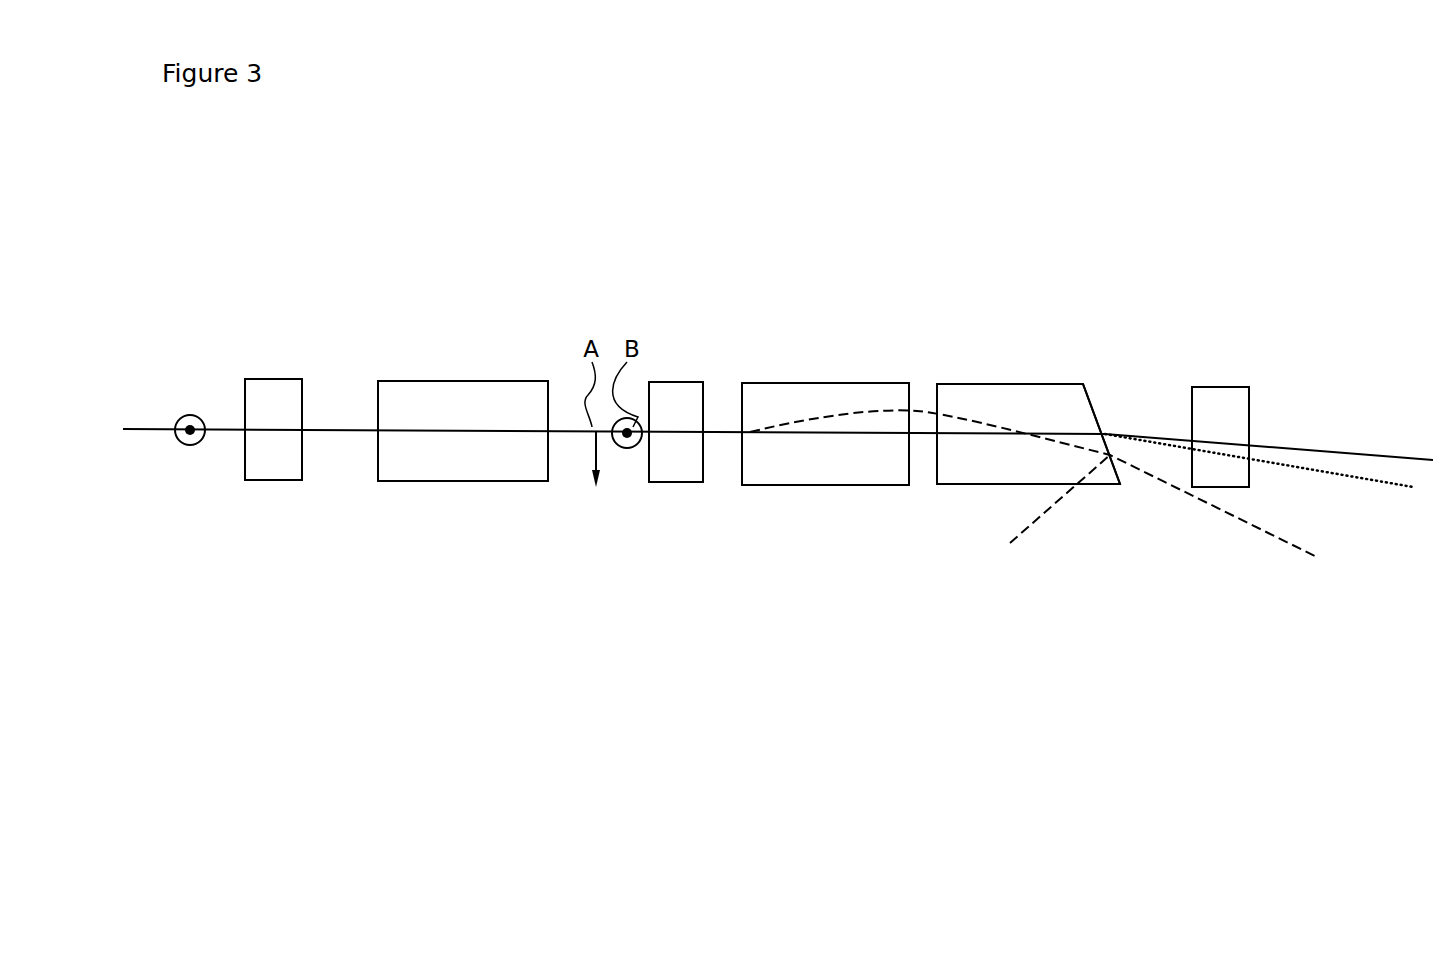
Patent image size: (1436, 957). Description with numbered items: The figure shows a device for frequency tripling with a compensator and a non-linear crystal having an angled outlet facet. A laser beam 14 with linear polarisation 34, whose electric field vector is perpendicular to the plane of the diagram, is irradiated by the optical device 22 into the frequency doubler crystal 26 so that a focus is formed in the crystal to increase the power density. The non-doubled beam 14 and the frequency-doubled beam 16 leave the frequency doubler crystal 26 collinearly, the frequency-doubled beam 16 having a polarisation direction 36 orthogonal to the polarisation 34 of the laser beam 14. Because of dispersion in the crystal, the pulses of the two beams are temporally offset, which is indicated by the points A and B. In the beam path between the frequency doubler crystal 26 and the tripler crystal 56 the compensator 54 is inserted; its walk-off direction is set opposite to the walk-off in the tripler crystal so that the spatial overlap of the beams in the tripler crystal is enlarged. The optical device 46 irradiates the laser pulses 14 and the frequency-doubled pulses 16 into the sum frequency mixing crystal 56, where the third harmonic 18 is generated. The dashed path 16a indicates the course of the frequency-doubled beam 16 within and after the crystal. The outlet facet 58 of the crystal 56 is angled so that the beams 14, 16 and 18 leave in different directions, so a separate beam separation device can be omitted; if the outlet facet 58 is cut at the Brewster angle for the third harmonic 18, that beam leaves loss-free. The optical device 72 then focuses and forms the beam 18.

The laser beam 14 is at (147, 423).
The frequency-doubled beam 16 is at (1033, 495).
The reflected portion of second light beam 16a is at (1060, 503).
The third harmonic 18 is at (1259, 473).
The optical device 22 is at (273, 413).
The frequency doubler crystal 26 is at (463, 413).
The linear polarisation 34 is at (205, 418).
The polarisation direction 36 is at (588, 478).
The optical device 46 is at (676, 414).
The compensator 54 is at (825, 416).
The frequency tripler crystal 56 is at (1028, 415).
The outlet facet 58 is at (1100, 414).
The optical device 72 is at (1220, 418).